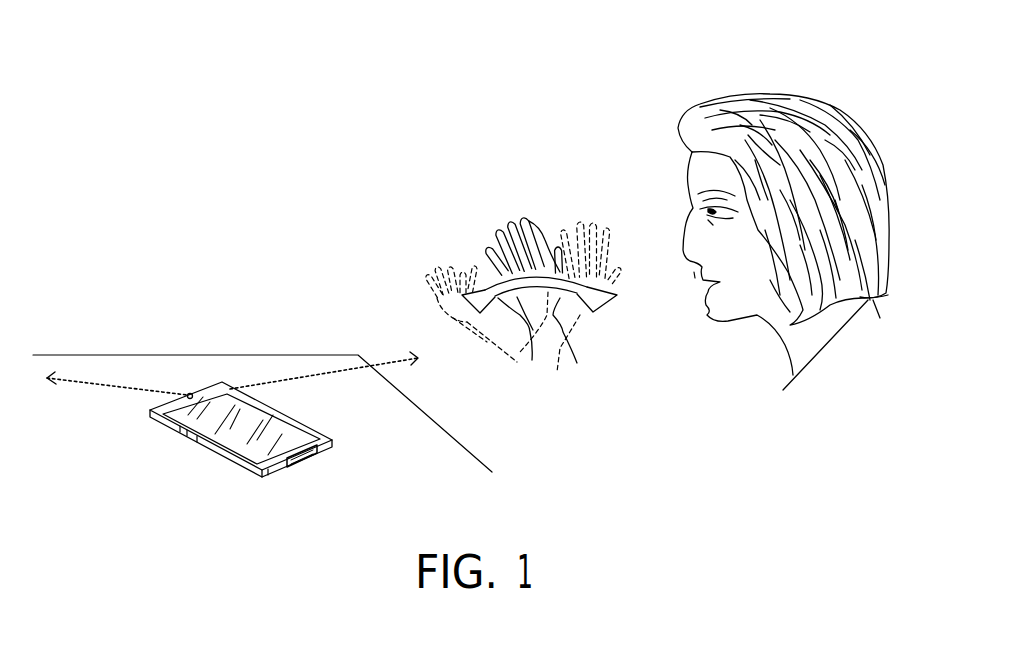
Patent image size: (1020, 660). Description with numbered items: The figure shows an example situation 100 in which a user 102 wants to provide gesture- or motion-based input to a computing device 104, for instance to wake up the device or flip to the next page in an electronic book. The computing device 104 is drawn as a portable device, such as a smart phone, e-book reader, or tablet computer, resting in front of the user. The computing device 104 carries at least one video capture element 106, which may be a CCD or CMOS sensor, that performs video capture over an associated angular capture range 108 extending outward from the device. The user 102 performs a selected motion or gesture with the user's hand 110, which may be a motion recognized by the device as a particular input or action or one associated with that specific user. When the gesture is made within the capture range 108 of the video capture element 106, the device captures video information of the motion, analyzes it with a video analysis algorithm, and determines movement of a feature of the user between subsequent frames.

The example situation 100 is at (129, 133).
The user 102 is at (641, 149).
The computing device 104 is at (150, 414).
The video capture element 106 is at (189, 399).
The capture range 108 is at (285, 360).
The hand 110 is at (446, 221).